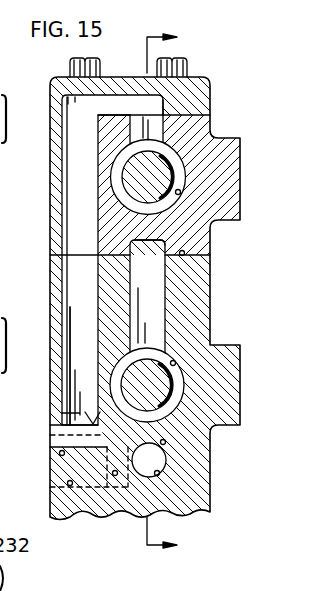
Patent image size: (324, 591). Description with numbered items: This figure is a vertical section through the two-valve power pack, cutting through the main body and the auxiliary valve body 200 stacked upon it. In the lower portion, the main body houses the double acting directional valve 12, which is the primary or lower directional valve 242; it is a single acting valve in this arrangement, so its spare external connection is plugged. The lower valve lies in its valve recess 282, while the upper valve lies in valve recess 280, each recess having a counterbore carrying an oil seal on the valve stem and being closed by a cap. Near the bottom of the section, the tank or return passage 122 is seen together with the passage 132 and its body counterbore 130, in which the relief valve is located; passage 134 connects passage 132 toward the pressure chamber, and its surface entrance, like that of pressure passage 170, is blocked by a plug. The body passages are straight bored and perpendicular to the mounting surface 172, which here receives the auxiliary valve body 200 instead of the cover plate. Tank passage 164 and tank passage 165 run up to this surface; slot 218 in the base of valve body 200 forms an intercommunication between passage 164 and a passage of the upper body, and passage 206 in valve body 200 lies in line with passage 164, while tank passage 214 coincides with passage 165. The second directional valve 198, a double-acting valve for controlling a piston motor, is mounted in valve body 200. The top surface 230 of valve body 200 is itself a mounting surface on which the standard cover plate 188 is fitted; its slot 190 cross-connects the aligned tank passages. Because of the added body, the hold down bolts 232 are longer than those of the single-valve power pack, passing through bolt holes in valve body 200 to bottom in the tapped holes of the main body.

The double acting directional valve 12 is at (172, 290).
The tank passage 122 is at (64, 455).
The body counterbore 130 is at (72, 485).
The passage 132 is at (117, 475).
The passage 134 is at (160, 474).
The tank passage 164 is at (153, 315).
The tank passage 165 is at (73, 288).
The pressure passage 170 is at (165, 440).
The mounting surface 172 is at (182, 256).
The cover plate 188 is at (145, 297).
The slot 190 is at (112, 260).
The second directional valve 198 is at (148, 177).
The auxiliary valve body 200 is at (169, 185).
The passage 206 is at (170, 137).
The tank passage 214 is at (77, 166).
The slot 218 is at (147, 240).
The top surface 230 is at (197, 110).
The hold down bolts 232 is at (73, 68).
The primary directional valve 242 is at (147, 385).
The valve recess 280 is at (176, 363).
The valve recess 282 is at (179, 194).